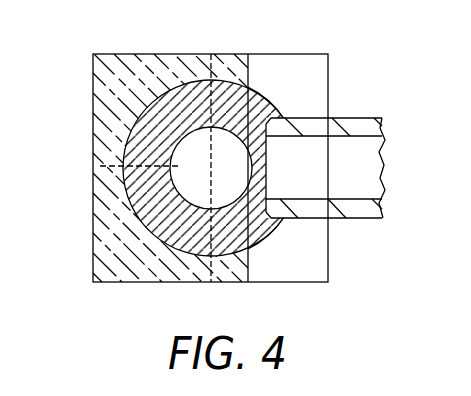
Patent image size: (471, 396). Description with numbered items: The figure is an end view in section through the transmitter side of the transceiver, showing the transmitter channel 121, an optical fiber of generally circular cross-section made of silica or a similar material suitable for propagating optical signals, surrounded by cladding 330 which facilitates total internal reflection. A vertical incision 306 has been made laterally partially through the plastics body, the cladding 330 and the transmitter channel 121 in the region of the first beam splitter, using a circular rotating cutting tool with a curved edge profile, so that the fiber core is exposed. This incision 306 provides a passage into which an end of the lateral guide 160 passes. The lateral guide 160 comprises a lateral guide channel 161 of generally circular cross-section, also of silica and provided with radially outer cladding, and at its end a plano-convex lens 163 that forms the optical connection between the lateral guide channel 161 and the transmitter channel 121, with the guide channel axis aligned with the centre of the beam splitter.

The cladding 330 is at (178, 96).
The transmitter channel 121 is at (102, 166).
The vertical incision 306 is at (249, 64).
The lateral guide 160 is at (353, 145).
The lateral guide channel 161 is at (366, 165).
The plano-convex lens 163 is at (270, 167).